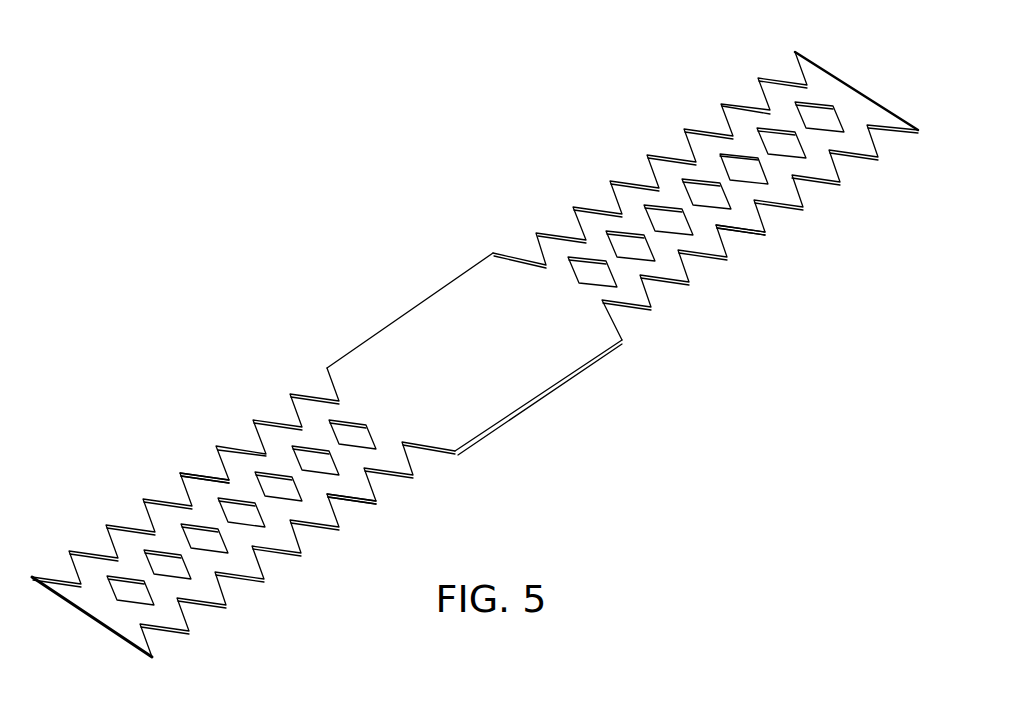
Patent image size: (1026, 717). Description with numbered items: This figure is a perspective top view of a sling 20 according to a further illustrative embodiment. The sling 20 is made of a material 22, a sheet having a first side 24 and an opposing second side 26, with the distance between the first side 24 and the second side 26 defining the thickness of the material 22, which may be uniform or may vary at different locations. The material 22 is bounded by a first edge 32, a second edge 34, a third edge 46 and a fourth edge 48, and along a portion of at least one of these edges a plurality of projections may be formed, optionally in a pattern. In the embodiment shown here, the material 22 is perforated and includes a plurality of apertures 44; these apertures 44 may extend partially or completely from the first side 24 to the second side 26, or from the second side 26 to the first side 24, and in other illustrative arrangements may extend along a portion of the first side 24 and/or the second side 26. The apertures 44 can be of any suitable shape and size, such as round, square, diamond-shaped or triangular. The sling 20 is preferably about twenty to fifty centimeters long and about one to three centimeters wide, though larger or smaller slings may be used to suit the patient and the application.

The sling 20 is at (475, 360).
The material 22 is at (705, 189).
The first side 24 is at (243, 525).
The second side 26 is at (361, 500).
The first edge 32 is at (193, 473).
The second edge 34 is at (749, 232).
The apertures 44 is at (130, 594).
The third edge 46 is at (90, 593).
The fourth edge 48 is at (852, 87).